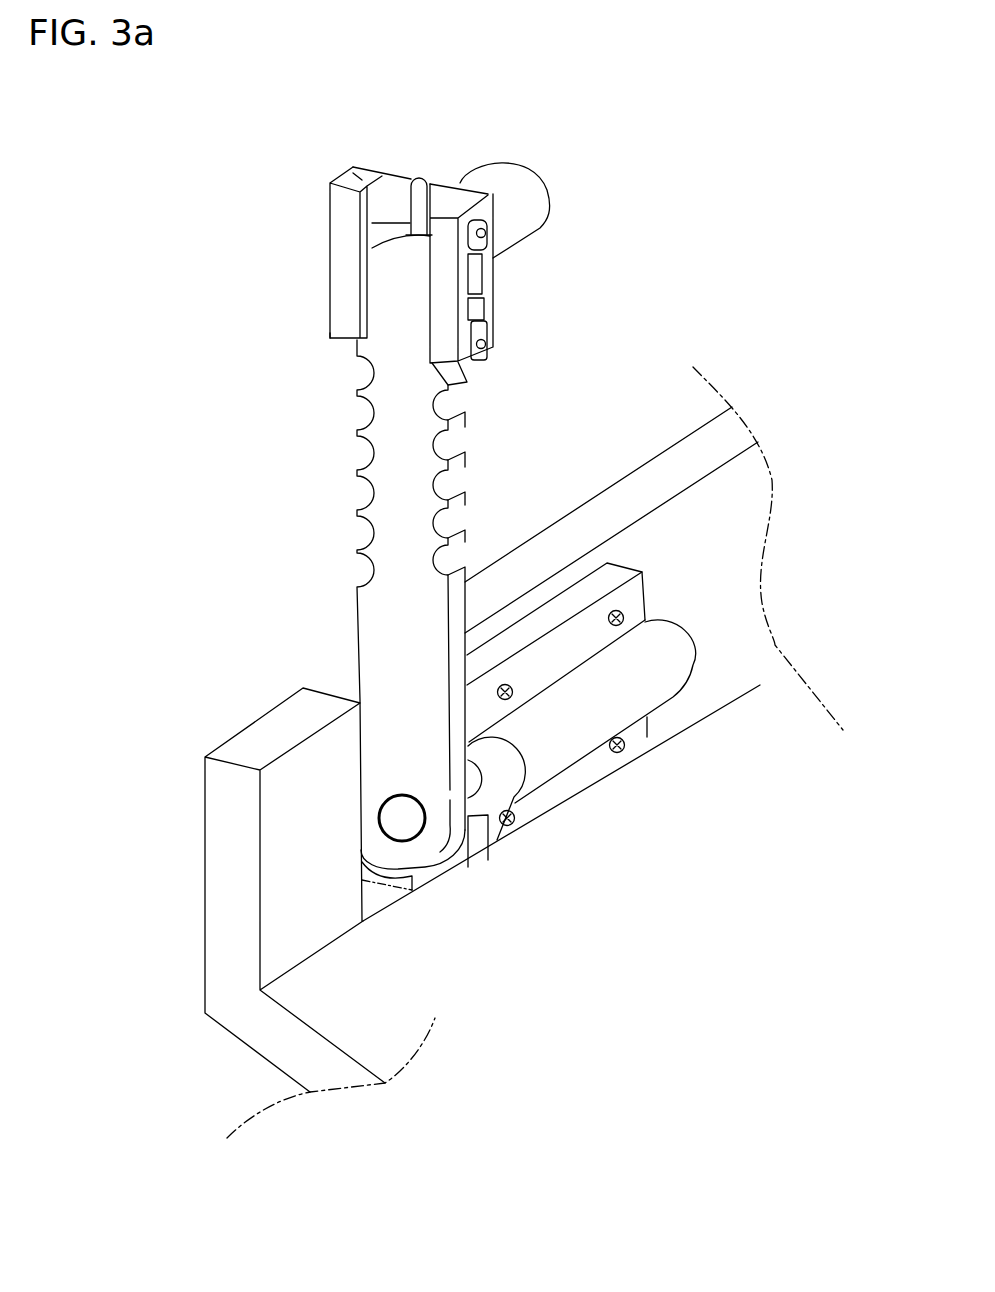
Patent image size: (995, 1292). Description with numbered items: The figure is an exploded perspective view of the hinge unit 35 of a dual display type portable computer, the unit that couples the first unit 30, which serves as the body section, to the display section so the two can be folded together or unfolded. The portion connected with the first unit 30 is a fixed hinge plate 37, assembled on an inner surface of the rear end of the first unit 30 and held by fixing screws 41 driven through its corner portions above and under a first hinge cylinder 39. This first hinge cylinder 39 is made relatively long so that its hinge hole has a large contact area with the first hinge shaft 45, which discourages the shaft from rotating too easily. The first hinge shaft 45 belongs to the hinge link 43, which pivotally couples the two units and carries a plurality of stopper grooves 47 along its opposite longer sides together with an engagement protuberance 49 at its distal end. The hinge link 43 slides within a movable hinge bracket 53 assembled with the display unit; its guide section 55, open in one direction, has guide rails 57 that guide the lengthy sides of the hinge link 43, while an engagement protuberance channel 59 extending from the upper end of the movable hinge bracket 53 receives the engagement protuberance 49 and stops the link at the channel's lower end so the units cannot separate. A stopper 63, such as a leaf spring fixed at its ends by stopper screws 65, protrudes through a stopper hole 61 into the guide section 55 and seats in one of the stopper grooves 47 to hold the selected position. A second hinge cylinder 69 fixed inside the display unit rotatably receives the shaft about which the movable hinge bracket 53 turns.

The first unit 30 is at (698, 470).
The hinge unit 35 is at (330, 512).
The fixed hinge plate 37 is at (563, 788).
The first hinge cylinder 39 is at (677, 640).
The fixing screws 41 is at (627, 747).
The hinge link 43 is at (372, 648).
The first hinge shaft 45 is at (493, 862).
The stopper grooves 47 is at (457, 436).
The engagement protuberance 49 is at (428, 181).
The movable hinge bracket 53 is at (340, 217).
The guide section 55 is at (376, 247).
The guide rails 57 is at (331, 340).
The engagement protuberance channel 59 is at (383, 177).
The stopper hole 61 is at (487, 276).
The stopper 63 is at (484, 310).
The stopper screws 65 is at (482, 236).
The second hinge cylinder 69 is at (527, 198).